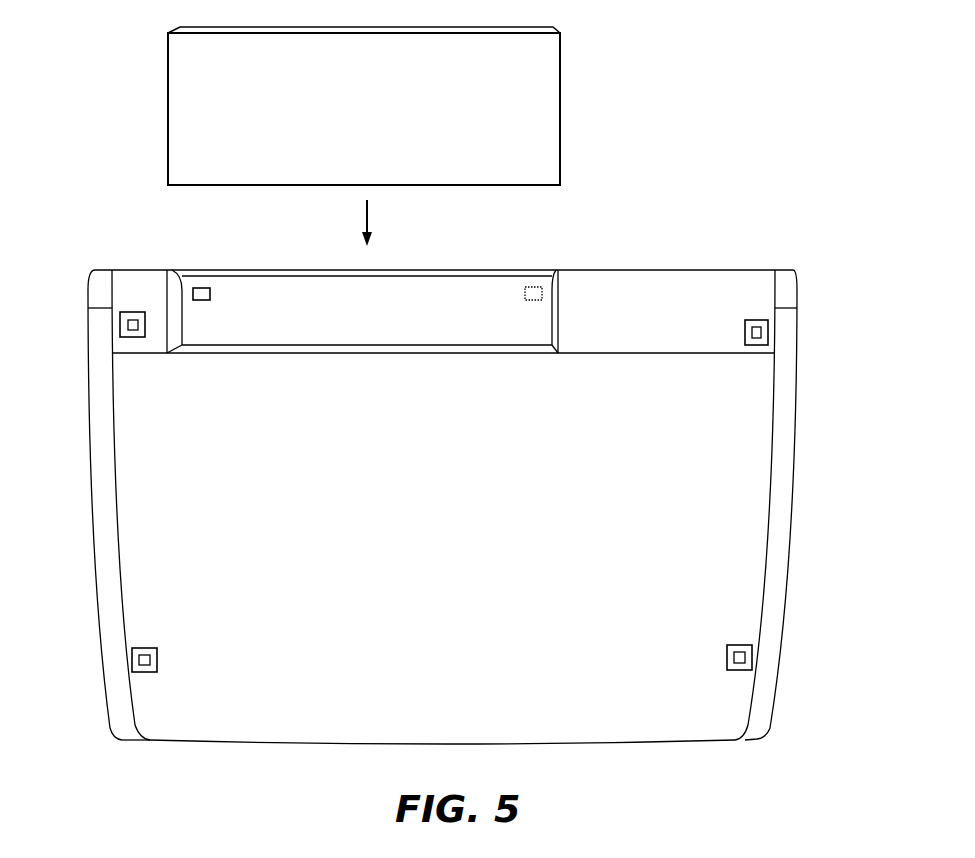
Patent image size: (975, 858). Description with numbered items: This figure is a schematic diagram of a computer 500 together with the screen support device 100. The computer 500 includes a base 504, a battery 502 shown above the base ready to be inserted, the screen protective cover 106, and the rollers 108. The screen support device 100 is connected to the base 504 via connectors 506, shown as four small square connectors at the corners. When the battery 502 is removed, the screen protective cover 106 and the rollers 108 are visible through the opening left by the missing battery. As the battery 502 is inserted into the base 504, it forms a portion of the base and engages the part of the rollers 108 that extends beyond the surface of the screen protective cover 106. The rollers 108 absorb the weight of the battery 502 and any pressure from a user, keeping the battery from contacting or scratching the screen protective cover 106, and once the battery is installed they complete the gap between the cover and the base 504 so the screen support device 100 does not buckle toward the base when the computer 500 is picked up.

The computer 500 is at (722, 176).
The battery 502 is at (528, 105).
The base 504 is at (537, 702).
The connectors 506 is at (98, 295).
The screen support device 100 is at (242, 282).
The screen protective cover 106 is at (473, 303).
The rollers 108 is at (196, 289).